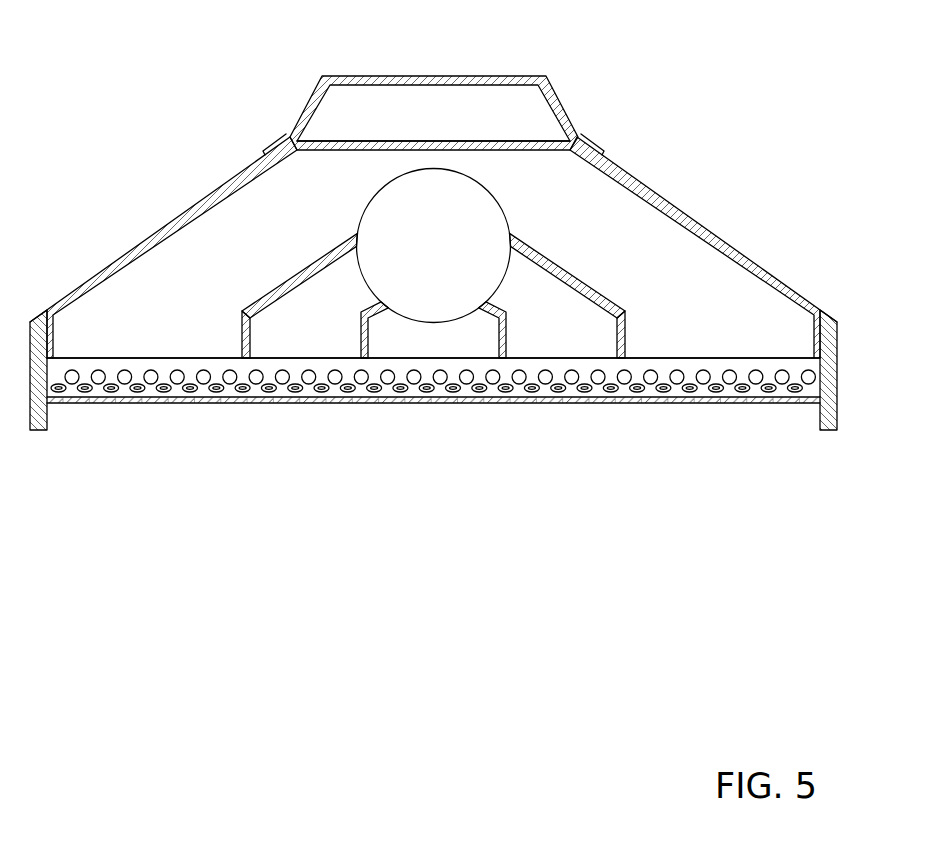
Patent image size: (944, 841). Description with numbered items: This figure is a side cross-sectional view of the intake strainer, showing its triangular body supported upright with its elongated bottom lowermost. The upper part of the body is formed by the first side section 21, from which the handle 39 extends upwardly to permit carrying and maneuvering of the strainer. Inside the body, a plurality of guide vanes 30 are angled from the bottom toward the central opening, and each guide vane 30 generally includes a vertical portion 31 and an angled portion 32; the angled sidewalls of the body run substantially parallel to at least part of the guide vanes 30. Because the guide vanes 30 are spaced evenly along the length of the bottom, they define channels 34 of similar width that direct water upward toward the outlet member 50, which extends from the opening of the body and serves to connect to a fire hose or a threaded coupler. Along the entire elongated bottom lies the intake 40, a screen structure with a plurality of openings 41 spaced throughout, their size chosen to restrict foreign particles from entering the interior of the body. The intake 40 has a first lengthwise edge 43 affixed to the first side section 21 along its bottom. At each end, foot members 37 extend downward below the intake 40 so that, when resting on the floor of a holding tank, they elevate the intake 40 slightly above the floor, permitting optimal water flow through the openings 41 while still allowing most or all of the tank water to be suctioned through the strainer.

The first side section 21 is at (213, 197).
The guide vanes 30 is at (478, 251).
The vertical portion 31 is at (626, 336).
The angled portion 32 is at (570, 274).
The channels 34 is at (183, 343).
The foot members 37 is at (46, 428).
The handle 39 is at (425, 76).
The intake 40 is at (433, 352).
The openings 41 is at (481, 385).
The first lengthwise edge 43 is at (113, 358).
The outlet member 50 is at (382, 190).